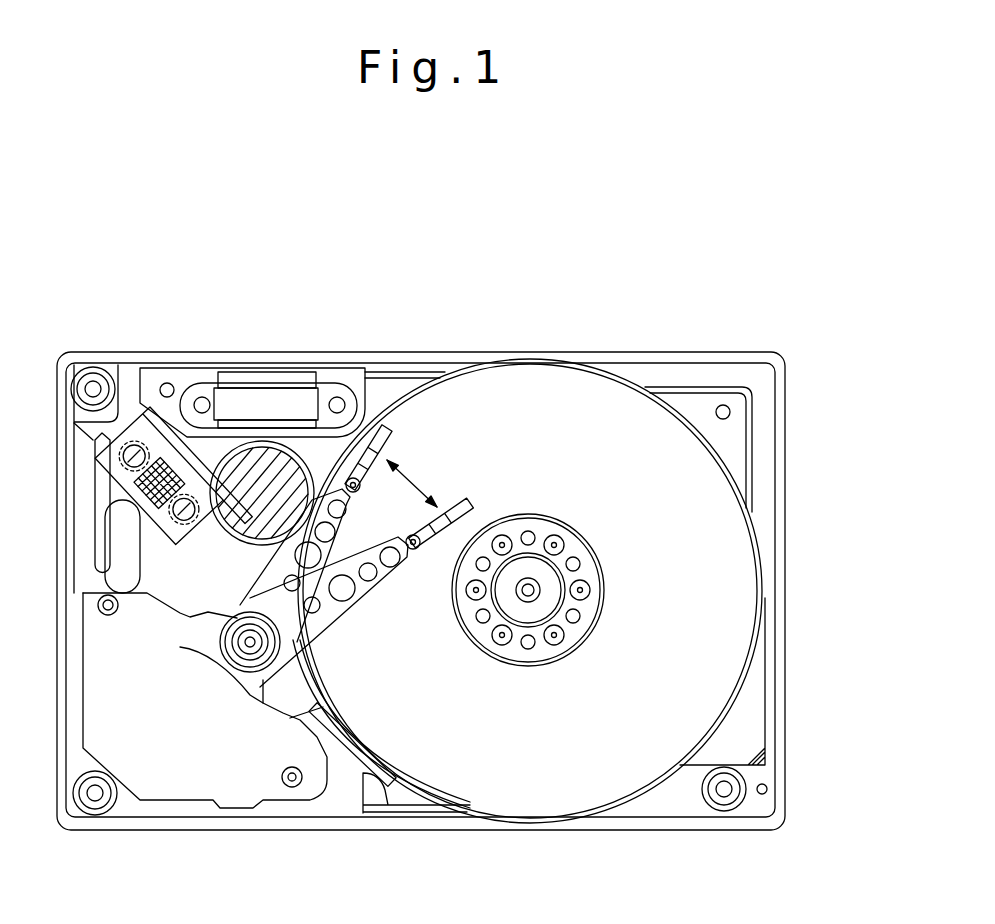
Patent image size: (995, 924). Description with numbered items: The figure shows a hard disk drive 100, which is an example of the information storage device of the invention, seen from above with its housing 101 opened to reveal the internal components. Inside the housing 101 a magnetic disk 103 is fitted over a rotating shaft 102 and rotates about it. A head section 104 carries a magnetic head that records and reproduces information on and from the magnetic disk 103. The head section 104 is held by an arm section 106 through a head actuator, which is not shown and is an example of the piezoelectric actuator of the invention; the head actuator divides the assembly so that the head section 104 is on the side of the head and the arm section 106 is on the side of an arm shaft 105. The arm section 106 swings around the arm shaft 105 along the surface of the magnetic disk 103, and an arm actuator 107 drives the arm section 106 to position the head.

The hard disk drive 100 is at (731, 261).
The housing 101 is at (640, 352).
The rotating shaft 102 is at (545, 607).
The magnetic disk 103 is at (727, 548).
The head section 104 is at (463, 500).
The arm shaft 105 is at (251, 660).
The arm section 106 is at (323, 625).
The arm actuator 107 is at (152, 770).